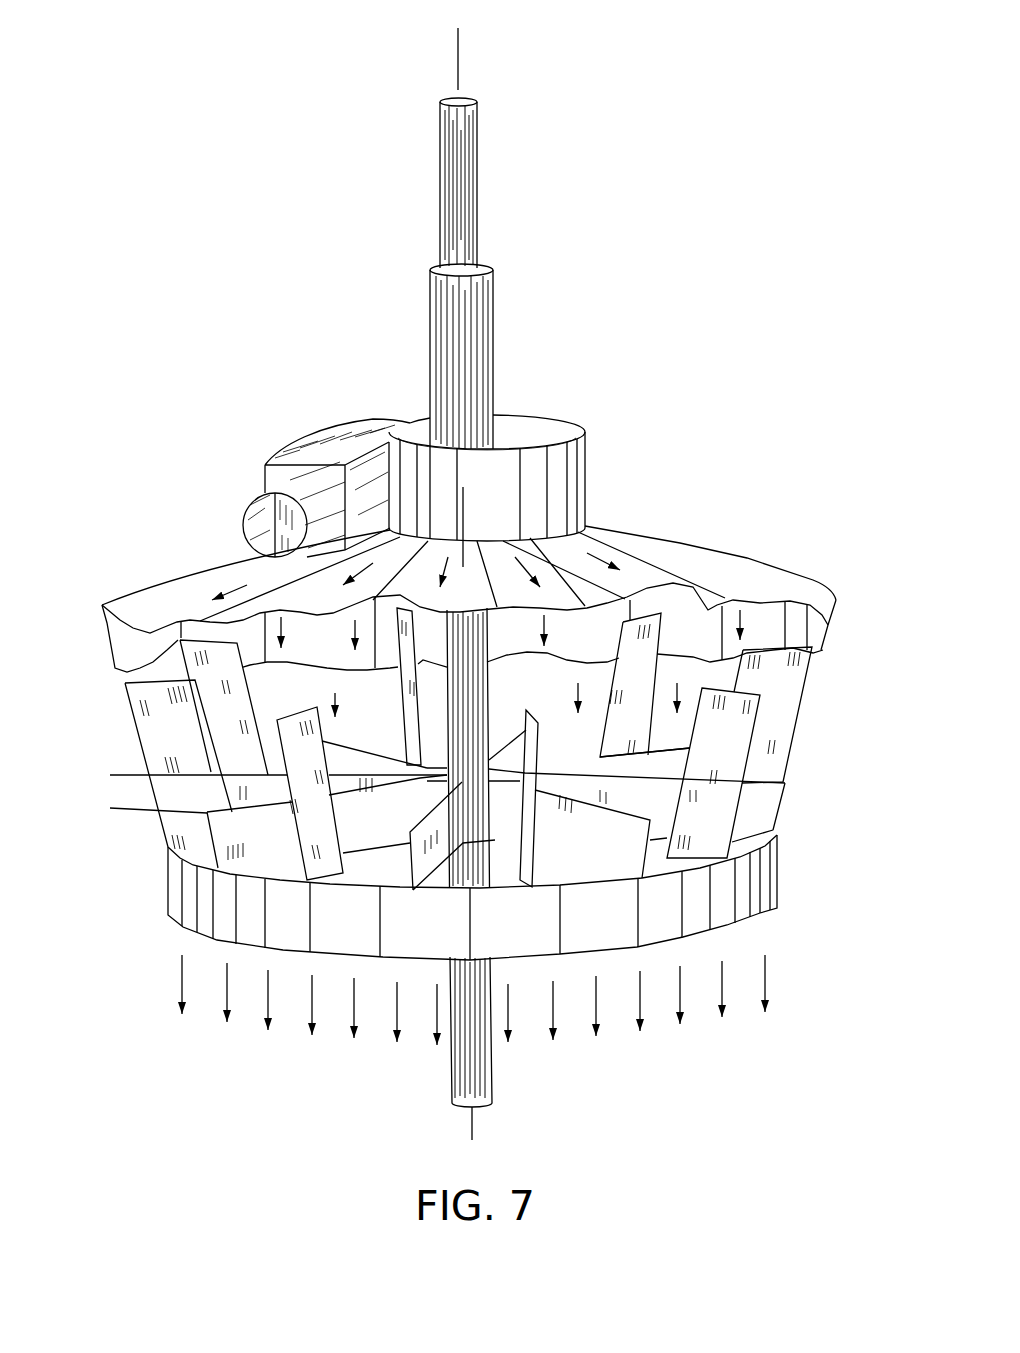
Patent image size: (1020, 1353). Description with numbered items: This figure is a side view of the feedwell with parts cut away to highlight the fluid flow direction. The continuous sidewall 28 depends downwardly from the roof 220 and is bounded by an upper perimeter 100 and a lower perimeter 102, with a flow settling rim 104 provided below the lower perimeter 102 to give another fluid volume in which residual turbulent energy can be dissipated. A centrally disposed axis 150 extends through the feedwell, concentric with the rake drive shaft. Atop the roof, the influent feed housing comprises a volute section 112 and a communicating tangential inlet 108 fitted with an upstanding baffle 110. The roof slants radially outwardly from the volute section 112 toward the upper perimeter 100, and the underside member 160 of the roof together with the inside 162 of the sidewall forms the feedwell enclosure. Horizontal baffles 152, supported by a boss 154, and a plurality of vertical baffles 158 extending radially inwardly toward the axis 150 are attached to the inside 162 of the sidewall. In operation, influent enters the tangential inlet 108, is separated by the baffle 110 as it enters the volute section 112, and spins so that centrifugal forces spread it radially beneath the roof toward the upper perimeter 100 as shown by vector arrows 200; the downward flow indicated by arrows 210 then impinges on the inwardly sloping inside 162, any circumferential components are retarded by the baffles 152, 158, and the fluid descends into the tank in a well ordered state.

The central axis 150 is at (455, 53).
The tangential inlet member 108 is at (308, 435).
The baffle member 110 is at (273, 512).
The volute section 112 is at (588, 478).
The vector arrows 200 is at (237, 615).
The underside member of the roof 160 is at (712, 610).
The downward fluid flow 210 is at (277, 628).
The upper perimeter 100 is at (468, 576).
The continuous sidewall 28 is at (108, 645).
The inside of the continuous sidewall 162 is at (797, 623).
The roof 220 is at (333, 693).
The vertical baffles 158 is at (157, 797).
The horizontal baffles 152 is at (245, 832).
The lower perimeter 102 is at (773, 833).
The flow settling rim 104 is at (722, 902).
The boss 154 is at (473, 822).